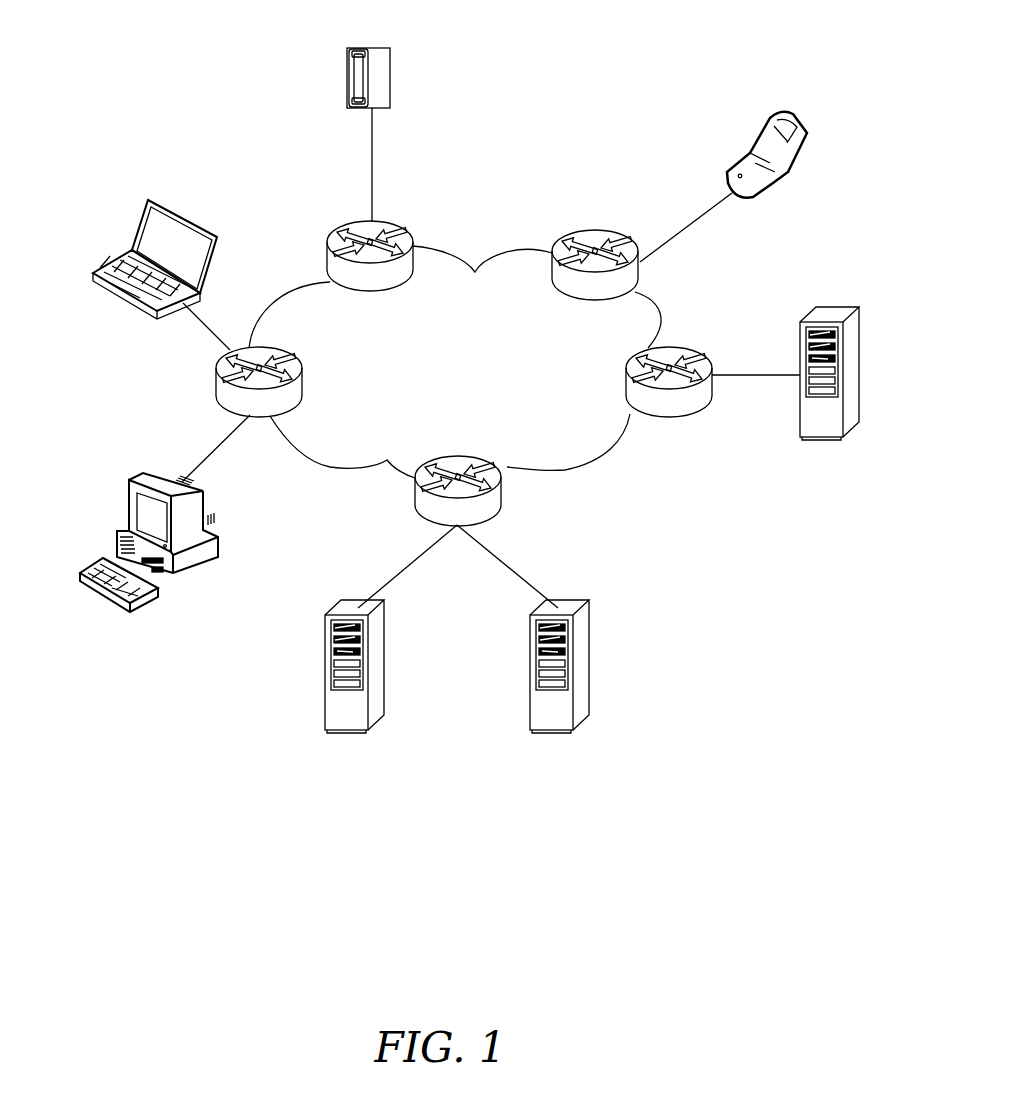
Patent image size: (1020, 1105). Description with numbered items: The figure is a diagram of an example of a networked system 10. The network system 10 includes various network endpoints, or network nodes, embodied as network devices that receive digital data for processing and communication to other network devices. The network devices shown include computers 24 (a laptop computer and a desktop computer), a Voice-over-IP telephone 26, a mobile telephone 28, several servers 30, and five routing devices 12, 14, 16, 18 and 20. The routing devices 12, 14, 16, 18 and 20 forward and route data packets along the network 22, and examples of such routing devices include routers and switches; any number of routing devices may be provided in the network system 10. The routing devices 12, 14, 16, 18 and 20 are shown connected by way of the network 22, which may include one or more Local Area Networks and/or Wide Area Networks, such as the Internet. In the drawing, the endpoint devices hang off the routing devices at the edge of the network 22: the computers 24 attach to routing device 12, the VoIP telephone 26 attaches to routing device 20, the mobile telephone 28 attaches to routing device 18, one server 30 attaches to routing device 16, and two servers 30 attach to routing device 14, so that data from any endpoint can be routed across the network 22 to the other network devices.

The networked system 10 is at (198, 77).
The routing device 12 is at (213, 388).
The routing device 14 is at (413, 510).
The routing device 16 is at (712, 405).
The routing device 18 is at (552, 250).
The routing device 20 is at (340, 225).
The network 22 is at (597, 462).
The computers 24 is at (102, 270).
The Voice-over-IP (VoIP) telephone 26 is at (367, 47).
The mobile telephone 28 is at (752, 152).
The servers 30 is at (803, 318).